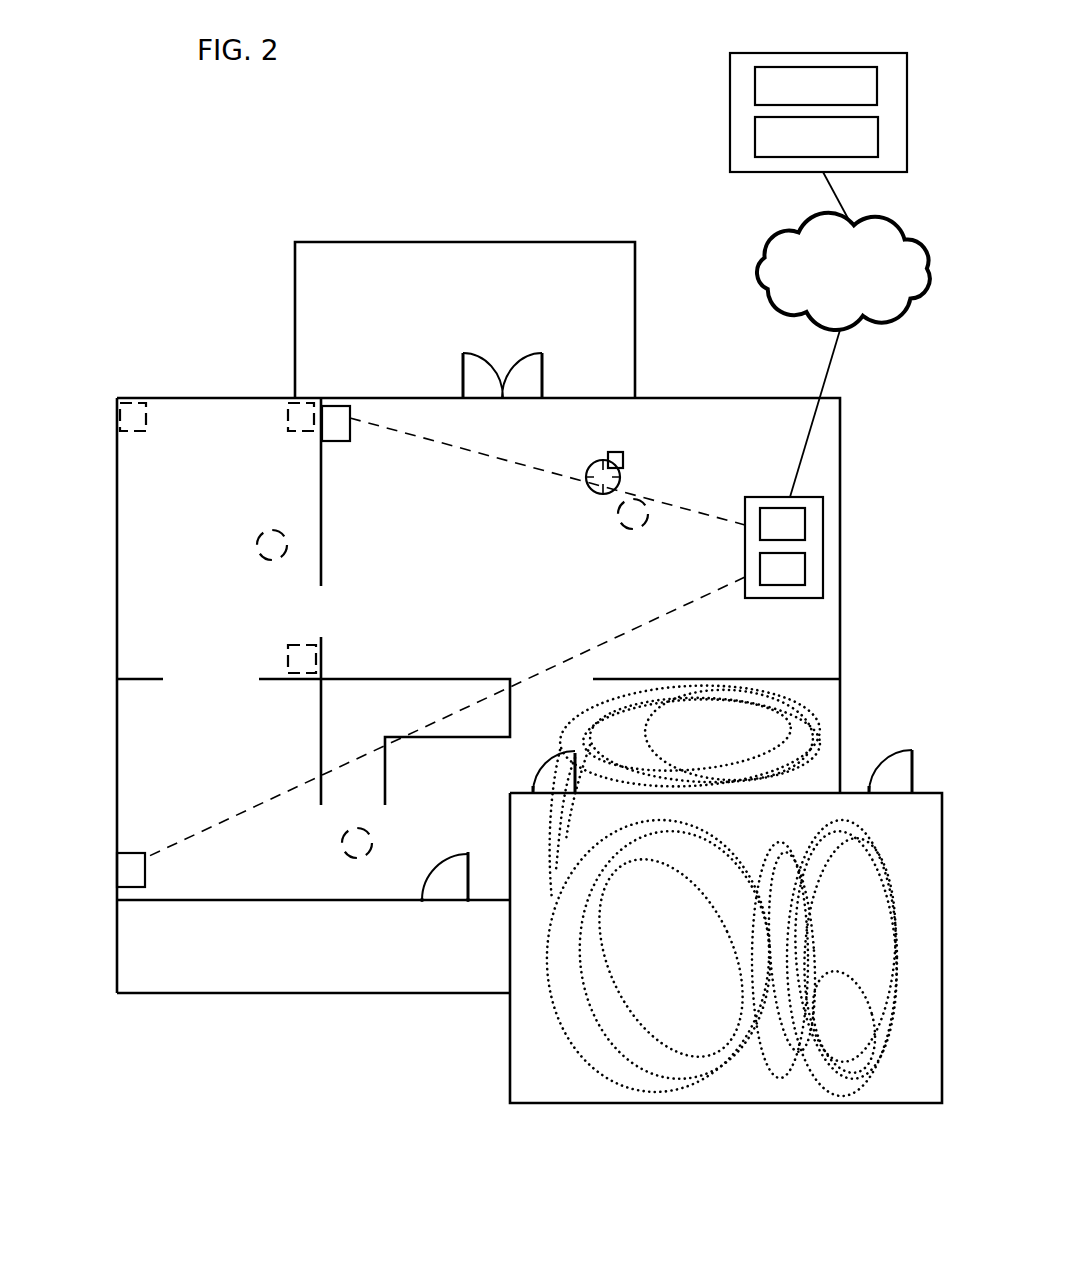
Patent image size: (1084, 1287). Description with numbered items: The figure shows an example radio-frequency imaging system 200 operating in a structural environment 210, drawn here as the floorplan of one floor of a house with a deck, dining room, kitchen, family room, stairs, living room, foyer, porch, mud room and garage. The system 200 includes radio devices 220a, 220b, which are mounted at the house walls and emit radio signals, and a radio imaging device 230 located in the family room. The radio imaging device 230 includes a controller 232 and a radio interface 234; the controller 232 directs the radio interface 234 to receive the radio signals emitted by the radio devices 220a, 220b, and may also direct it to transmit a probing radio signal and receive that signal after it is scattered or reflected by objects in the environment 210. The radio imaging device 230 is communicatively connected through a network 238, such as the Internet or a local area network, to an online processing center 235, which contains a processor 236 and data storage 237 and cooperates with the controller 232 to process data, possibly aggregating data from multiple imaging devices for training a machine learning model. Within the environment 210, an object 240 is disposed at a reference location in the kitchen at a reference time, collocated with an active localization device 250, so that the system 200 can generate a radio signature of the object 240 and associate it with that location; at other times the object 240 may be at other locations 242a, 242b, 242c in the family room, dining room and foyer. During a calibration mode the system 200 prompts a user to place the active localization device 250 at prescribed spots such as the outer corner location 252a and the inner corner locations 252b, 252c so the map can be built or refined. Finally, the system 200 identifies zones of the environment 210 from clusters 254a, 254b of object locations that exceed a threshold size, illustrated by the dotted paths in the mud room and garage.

The system 200 is at (866, 590).
The structural environment 210 is at (440, 203).
The radio device 220a is at (135, 887).
The radio device 220b is at (325, 406).
The radio imaging device 230 is at (824, 542).
The controller 232 is at (806, 572).
The radio interface 234 is at (806, 522).
The online processing center 235 is at (729, 115).
The processor 236 is at (754, 150).
The data storage 237 is at (754, 80).
The network 238 is at (762, 238).
The object 240 is at (621, 475).
The location 242a is at (655, 505).
The location 242b is at (357, 858).
The location 242c is at (256, 545).
The active localization device 250 is at (623, 462).
The location 252a is at (130, 403).
The location 252b is at (288, 412).
The location 252c is at (286, 658).
The cluster 254a is at (820, 738).
The cluster 254b is at (592, 1077).